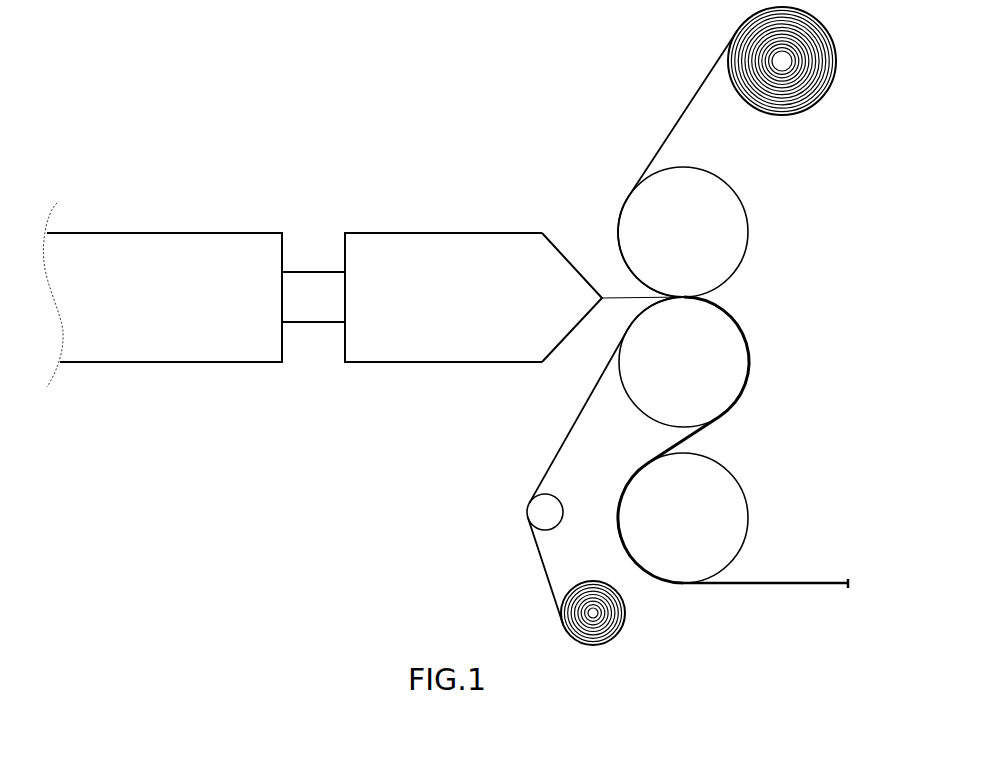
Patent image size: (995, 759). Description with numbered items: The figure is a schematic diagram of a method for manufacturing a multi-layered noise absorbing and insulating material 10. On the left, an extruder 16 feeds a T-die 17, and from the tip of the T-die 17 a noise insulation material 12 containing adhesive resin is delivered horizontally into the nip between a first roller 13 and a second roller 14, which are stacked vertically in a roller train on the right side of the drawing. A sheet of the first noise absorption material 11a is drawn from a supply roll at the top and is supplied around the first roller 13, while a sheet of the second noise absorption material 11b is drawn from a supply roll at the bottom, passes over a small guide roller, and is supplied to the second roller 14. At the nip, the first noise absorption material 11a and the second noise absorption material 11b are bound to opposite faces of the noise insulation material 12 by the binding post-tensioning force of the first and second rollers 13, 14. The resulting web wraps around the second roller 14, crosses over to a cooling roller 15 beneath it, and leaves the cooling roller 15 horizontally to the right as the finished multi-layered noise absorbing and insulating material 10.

The multi-layered noise absorbing and insulating material 10 is at (780, 585).
The first noise absorption material 11a is at (677, 120).
The second noise absorption material 11b is at (548, 468).
The noise insulation material 12 is at (608, 293).
The first roller 13 is at (730, 232).
The second roller 14 is at (730, 367).
The cooling roller 15 is at (730, 517).
The extruder 16 is at (213, 245).
The T-die 17 is at (468, 245).